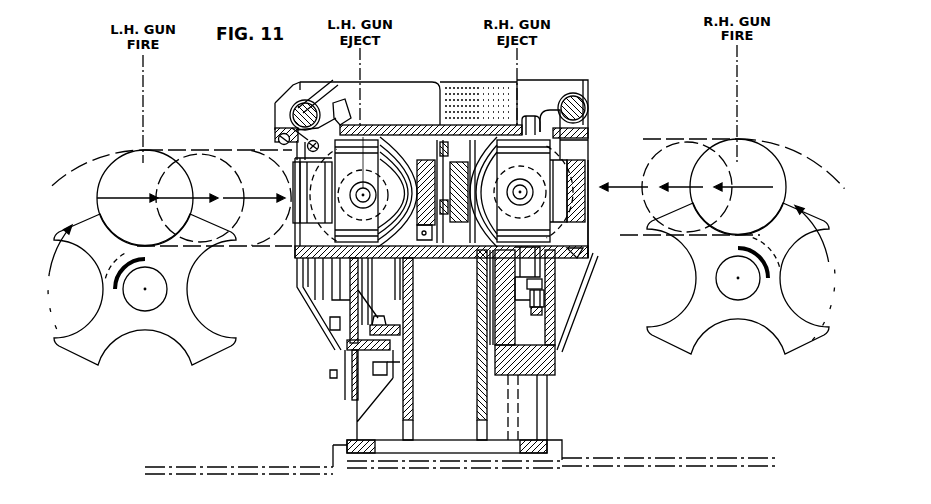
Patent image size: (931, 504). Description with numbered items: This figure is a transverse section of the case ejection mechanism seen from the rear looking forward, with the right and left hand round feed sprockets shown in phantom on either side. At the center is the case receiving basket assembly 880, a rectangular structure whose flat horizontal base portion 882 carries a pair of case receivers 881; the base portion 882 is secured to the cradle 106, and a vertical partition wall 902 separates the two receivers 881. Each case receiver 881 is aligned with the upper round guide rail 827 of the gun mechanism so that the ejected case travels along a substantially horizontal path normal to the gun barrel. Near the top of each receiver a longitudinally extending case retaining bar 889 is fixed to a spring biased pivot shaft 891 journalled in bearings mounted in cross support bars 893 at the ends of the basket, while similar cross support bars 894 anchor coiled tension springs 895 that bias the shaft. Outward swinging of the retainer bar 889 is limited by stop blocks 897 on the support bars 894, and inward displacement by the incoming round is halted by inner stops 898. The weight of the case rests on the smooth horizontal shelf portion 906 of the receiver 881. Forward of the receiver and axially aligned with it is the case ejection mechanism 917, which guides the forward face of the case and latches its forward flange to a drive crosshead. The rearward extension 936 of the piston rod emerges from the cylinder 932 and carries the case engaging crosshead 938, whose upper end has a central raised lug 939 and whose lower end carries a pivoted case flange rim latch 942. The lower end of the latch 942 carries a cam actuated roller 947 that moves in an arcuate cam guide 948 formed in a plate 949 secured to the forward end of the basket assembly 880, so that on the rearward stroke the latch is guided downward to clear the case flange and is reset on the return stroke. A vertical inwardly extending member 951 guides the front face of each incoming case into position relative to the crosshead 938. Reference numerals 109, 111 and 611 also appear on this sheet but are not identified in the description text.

The cradle 106 is at (326, 458).
The right hand gun 109 is at (722, 148).
The ejector assembly 111 is at (240, 82).
The right hand rotor 611 is at (741, 322).
The upper round guide rail 827 is at (806, 156).
The case receiving basket assembly 880 is at (401, 79).
The case receiver 881 is at (292, 152).
The flat horizontal base portion 882 is at (553, 447).
The case retaining bar 889 is at (356, 128).
The pivot shaft 891 is at (297, 101).
The cross support bars 893 is at (567, 80).
The cross support bars 894 is at (306, 90).
The coiled tension springs 895 is at (292, 110).
The stop blocks 897 is at (279, 130).
The inner stops 898 is at (343, 99).
The vertical partition wall 902 is at (418, 130).
The horizontal shelf portion 906 is at (572, 256).
The case ejection mechanism 917 is at (540, 265).
The cylinder 932 is at (492, 150).
The rearward extension of the piston rod 936 is at (524, 191).
The case engaging crosshead 938 is at (586, 228).
The central raised lug 939 is at (525, 135).
The case flange rim latch 942 is at (542, 284).
The cam actuated roller 947 is at (544, 298).
The arcuate cam guide 948 is at (562, 332).
The plate 949 is at (556, 362).
The vertical inwardly extending member 951 is at (548, 189).